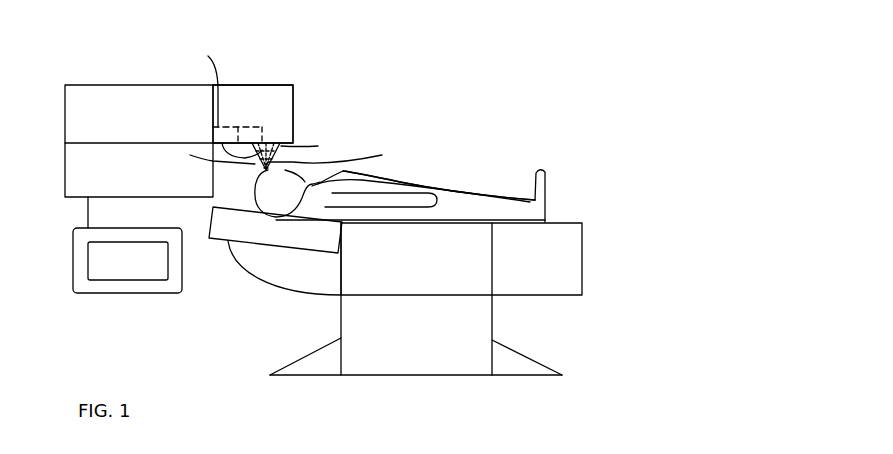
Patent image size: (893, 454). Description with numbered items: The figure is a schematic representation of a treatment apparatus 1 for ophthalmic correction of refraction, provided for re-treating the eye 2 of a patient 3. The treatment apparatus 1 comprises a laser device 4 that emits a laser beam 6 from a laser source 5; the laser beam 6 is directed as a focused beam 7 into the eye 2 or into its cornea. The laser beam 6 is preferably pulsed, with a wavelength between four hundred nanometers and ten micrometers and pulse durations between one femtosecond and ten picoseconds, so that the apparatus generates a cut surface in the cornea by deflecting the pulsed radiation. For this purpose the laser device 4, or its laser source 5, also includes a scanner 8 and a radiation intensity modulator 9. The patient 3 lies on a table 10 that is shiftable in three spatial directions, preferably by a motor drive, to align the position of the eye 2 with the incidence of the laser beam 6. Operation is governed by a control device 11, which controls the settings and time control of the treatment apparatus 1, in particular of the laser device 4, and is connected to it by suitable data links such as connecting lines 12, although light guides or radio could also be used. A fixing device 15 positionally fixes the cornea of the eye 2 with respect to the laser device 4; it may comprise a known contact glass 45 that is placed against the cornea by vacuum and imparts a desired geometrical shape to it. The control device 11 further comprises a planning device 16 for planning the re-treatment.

The treatment apparatus 1 is at (459, 48).
The eye 2 is at (267, 176).
The patient 3 is at (548, 196).
The laser device 4 is at (80, 92).
The laser source 5 is at (293, 105).
The laser beam 6 is at (283, 157).
The focused beam 7 is at (330, 153).
The scanner 8 is at (262, 127).
The radiation intensity modulator 9 is at (208, 82).
The table 10 is at (542, 285).
The control device 11 is at (82, 293).
The connecting lines 12 is at (88, 214).
The fixing device 15 is at (210, 157).
The planning device 16 is at (98, 255).
The contact glass 45 is at (400, 181).